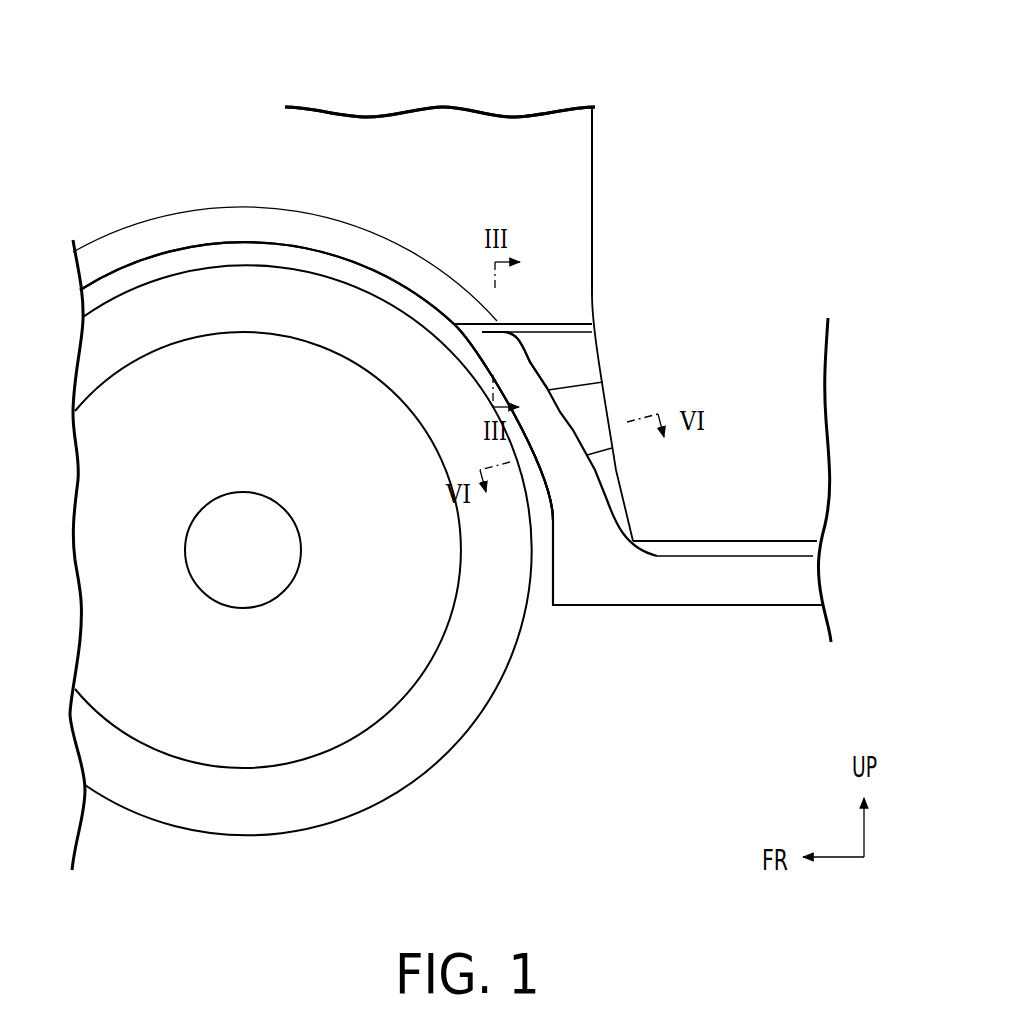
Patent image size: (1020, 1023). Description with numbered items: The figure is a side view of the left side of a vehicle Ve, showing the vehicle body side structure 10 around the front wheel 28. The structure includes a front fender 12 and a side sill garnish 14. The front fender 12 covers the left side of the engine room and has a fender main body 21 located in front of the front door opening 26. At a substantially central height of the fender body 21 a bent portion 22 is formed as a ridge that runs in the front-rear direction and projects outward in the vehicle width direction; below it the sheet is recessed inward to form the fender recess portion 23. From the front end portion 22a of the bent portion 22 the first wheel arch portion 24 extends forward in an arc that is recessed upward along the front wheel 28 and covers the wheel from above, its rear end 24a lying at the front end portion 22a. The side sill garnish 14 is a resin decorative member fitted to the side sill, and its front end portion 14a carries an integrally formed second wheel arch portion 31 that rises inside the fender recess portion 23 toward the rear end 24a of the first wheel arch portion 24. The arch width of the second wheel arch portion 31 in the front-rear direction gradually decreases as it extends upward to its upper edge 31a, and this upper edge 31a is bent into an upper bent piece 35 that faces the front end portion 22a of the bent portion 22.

The vehicle Ve is at (344, 132).
The vehicle body side structure 10 is at (533, 155).
The front fender 12 is at (610, 138).
The fender main body 21 is at (570, 193).
The bent portion 22 is at (533, 322).
The front end portion of the bent portion 22a is at (483, 331).
The first wheel arch portion 24 is at (237, 220).
The rear end of the first wheel arch portion 24a is at (423, 403).
The front door opening 26 is at (593, 308).
The fender recess portion 23 is at (585, 374).
The front wheel 28 is at (138, 286).
The second wheel arch portion 31 is at (563, 438).
The upper edge of the second wheel arch portion 31a is at (493, 343).
The upper bent piece 35 is at (451, 470).
The side sill garnish 14 is at (761, 527).
The front end portion of the side sill garnish 14a is at (620, 578).